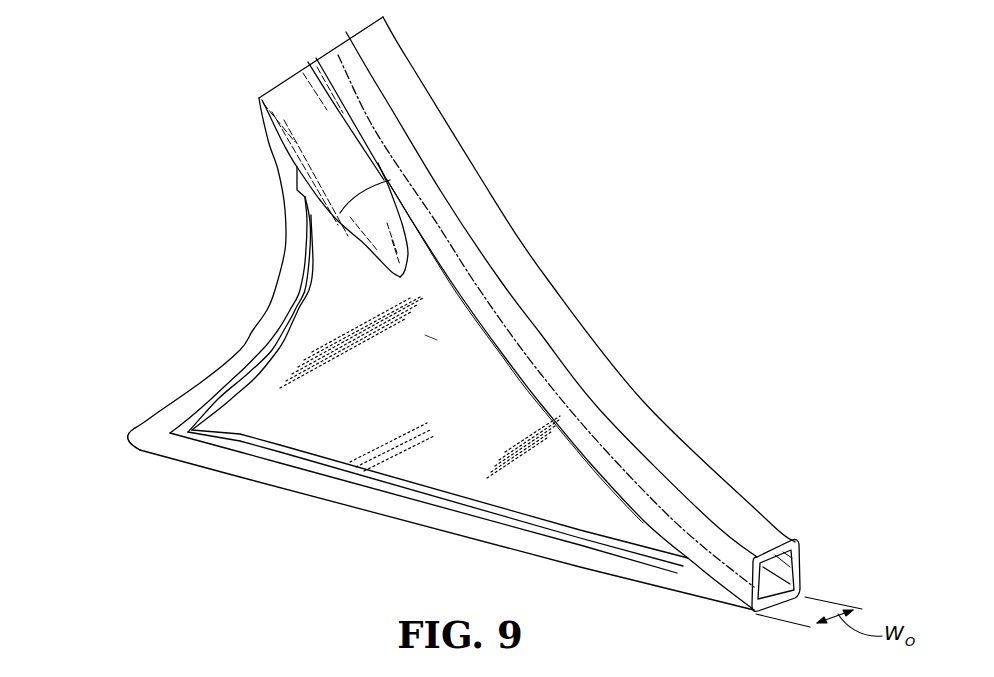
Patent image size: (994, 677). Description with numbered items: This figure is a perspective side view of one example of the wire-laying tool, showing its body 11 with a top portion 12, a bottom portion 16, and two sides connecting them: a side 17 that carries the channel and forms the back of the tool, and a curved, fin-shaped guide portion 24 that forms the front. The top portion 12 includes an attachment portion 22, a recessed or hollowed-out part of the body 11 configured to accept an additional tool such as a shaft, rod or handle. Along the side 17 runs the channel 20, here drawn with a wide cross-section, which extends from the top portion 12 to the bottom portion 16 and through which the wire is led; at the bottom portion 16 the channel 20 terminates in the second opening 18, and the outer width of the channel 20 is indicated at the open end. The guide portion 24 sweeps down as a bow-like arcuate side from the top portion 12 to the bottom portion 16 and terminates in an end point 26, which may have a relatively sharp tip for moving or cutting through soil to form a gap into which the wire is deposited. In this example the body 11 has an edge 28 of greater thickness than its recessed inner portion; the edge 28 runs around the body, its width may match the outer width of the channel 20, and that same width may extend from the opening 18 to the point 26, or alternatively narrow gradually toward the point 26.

The body 11 is at (435, 333).
The top portion 12 is at (287, 87).
The bottom portion 16 is at (427, 518).
The side 17 is at (505, 388).
The second opening 18 is at (800, 566).
The channel 20 is at (657, 437).
The attachment portion 22 is at (328, 152).
The guide portion 24 is at (262, 312).
The end point 26 is at (105, 440).
The edge 28 is at (321, 488).